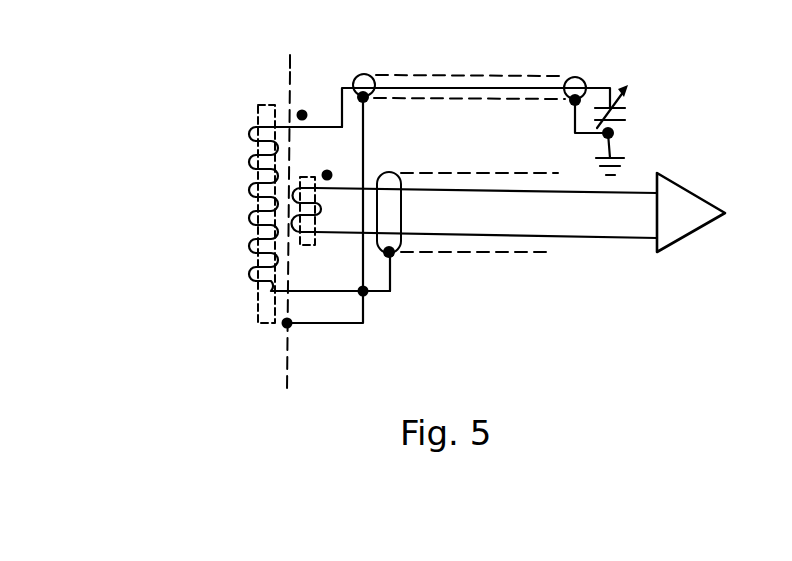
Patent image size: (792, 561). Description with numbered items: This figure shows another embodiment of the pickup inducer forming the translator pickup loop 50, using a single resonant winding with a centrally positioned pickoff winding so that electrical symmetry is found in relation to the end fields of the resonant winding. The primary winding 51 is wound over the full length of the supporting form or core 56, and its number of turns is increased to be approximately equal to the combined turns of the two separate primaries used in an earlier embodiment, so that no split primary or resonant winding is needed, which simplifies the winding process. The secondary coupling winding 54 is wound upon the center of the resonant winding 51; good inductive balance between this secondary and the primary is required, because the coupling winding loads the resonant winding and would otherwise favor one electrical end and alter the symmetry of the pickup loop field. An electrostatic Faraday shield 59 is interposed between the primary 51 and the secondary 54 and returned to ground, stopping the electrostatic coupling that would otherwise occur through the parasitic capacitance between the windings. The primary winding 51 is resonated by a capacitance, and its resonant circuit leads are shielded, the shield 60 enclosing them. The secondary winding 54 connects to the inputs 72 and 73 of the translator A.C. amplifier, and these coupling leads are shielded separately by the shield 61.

The translator pickup loop 50 is at (525, 314).
The primary winding 51 is at (245, 163).
The secondary coupling winding 54 is at (322, 203).
The core 56 is at (262, 103).
The electrostatic shield 59 is at (293, 67).
The resonant circuit lead shield 60 is at (372, 73).
The coupling lead shield 61 is at (393, 257).
The amplifier input 72 is at (590, 197).
The amplifier input 73 is at (605, 240).